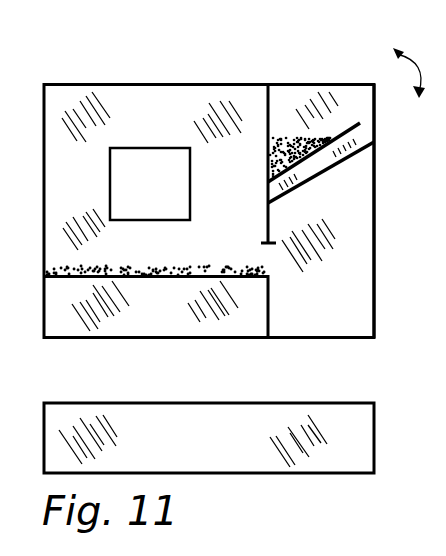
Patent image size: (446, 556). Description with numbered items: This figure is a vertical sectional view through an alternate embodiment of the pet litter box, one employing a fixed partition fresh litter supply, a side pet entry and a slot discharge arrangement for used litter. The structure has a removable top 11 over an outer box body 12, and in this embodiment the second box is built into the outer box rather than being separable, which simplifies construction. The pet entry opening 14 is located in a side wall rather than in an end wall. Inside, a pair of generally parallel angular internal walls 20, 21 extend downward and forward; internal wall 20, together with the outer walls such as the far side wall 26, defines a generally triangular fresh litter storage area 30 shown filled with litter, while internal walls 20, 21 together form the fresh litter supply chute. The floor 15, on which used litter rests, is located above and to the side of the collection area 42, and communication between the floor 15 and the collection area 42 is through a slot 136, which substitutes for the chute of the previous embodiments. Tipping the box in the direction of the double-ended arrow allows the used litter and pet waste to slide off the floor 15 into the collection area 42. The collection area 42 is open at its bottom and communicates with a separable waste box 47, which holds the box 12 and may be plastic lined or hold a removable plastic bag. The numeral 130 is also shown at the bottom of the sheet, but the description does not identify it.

The removable top 11 is at (210, 83).
The far side wall 26 is at (62, 100).
The opening 14 is at (120, 158).
The floor 15 is at (70, 258).
The fresh litter storage area 30 is at (278, 140).
The internal wall 20 is at (330, 138).
The internal wall 21 is at (345, 159).
The outer box body 12 is at (375, 190).
The slot 136 is at (271, 244).
The collection area 42 is at (362, 324).
The waste box 47 is at (345, 459).
The toner layer 130 is at (169, 551).